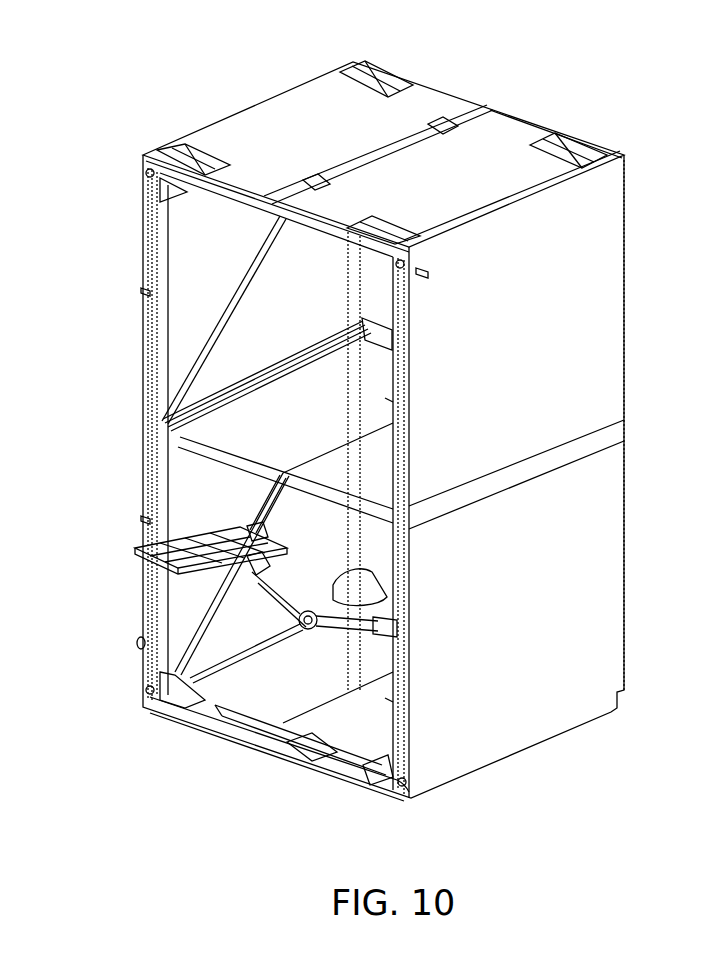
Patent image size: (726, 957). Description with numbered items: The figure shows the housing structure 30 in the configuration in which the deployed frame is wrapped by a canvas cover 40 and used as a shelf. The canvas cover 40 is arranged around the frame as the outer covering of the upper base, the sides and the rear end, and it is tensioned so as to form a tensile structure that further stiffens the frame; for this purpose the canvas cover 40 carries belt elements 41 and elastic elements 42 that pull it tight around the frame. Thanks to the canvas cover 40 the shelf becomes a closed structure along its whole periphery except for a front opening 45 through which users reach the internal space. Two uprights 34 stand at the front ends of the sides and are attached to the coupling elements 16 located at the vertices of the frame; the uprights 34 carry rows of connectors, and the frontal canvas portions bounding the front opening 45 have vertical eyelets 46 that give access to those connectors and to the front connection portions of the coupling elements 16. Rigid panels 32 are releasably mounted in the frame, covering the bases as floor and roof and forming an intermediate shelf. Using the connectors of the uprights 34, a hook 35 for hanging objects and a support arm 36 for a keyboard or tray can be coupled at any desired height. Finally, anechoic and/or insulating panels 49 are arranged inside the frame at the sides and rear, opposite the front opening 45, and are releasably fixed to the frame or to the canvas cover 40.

The housing structure 30 is at (548, 746).
The canvas cover 40 is at (583, 258).
The belt elements 41 is at (201, 160).
The elastic elements 42 is at (418, 140).
The front opening 45 is at (555, 425).
The uprights 34 is at (165, 220).
The vertical eyelets 46 is at (148, 291).
The coupling elements 16 is at (365, 575).
The rigid panel 32 is at (385, 474).
The anechoic and/or insulating panels 49 is at (165, 197).
The hook 35 is at (137, 643).
The support arm 36 is at (296, 640).